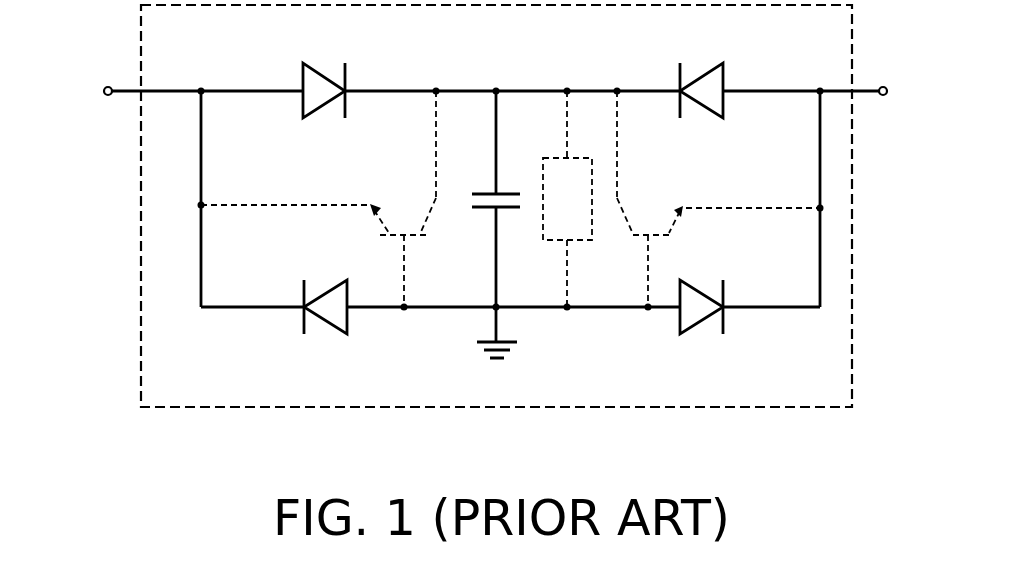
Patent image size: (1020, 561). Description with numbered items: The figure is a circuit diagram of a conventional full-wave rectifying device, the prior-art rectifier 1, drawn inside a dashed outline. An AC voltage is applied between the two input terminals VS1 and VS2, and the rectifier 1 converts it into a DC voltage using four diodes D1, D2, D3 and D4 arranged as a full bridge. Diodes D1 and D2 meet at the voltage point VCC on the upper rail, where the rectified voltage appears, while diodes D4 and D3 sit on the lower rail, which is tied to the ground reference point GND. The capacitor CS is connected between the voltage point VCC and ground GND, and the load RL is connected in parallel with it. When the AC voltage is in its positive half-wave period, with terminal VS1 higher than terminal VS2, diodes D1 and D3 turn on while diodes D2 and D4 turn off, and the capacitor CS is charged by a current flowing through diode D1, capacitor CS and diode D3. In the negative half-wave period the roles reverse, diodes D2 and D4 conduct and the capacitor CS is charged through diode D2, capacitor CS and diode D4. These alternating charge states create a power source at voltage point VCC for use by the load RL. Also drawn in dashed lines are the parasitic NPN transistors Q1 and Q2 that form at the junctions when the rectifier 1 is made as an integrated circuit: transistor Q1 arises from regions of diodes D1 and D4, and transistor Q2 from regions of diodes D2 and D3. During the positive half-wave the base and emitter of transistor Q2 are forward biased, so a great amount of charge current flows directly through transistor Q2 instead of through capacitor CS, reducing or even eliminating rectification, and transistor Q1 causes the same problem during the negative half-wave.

The rectifier 1 is at (840, 376).
The diode D1 is at (324, 68).
The diode D2 is at (701, 68).
The diode D3 is at (701, 328).
The diode D4 is at (326, 328).
The parasitic NPN transistor Q1 is at (318, 199).
The parasitic NPN transistor Q2 is at (718, 199).
The capacitor CS is at (483, 199).
The load RL is at (567, 199).
The terminal VS1 is at (125, 92).
The terminal VS2 is at (882, 92).
The voltage point VCC is at (496, 63).
The ground reference point GND is at (494, 356).